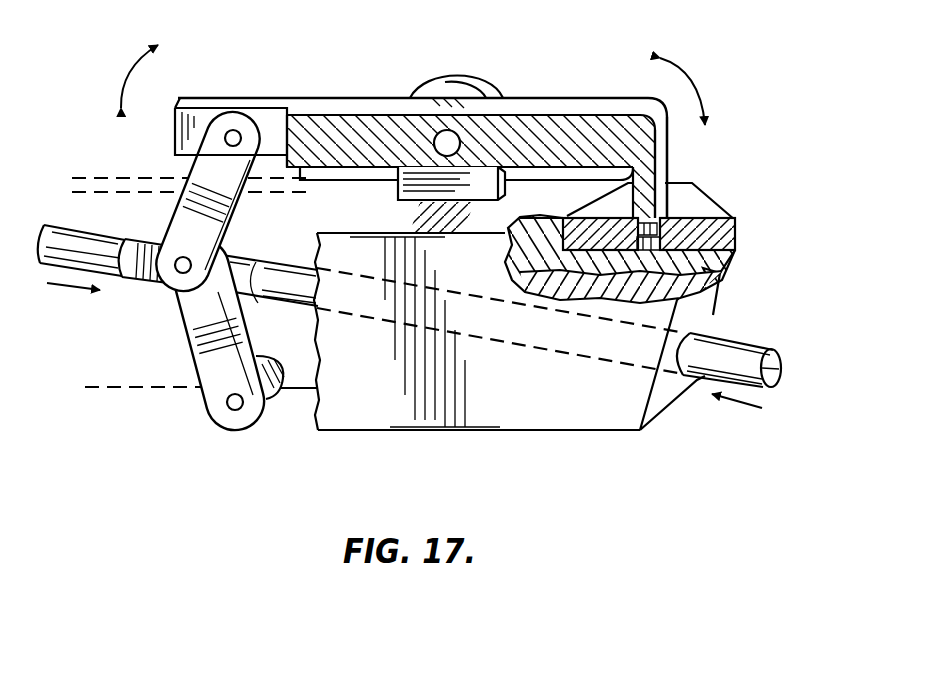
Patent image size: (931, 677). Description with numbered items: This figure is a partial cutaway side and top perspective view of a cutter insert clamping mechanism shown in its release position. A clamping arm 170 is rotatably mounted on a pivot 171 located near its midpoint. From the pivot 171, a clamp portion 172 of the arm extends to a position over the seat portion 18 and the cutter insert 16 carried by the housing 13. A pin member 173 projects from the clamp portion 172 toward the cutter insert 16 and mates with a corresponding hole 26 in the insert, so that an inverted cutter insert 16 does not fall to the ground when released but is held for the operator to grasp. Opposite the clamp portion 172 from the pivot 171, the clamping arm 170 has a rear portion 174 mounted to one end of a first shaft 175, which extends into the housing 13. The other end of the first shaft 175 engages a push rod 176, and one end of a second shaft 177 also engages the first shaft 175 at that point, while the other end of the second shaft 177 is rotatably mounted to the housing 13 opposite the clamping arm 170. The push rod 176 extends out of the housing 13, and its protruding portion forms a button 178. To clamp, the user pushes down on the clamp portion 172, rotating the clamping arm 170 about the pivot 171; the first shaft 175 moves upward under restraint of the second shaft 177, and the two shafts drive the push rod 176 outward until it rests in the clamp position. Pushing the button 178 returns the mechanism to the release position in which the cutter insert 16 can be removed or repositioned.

The housing 13 is at (568, 396).
The cutter insert 16 is at (733, 230).
The seat portion 18 is at (712, 282).
The hole 26 is at (740, 262).
The clamping arm 170 is at (359, 108).
The pivot 171 is at (462, 145).
The clamp portion 172 is at (667, 160).
The pin member 173 is at (692, 183).
The rear portion 174 is at (309, 98).
The first shaft 175 is at (207, 168).
The push rod 176 is at (279, 310).
The second shaft 177 is at (197, 322).
The button 178 is at (781, 368).